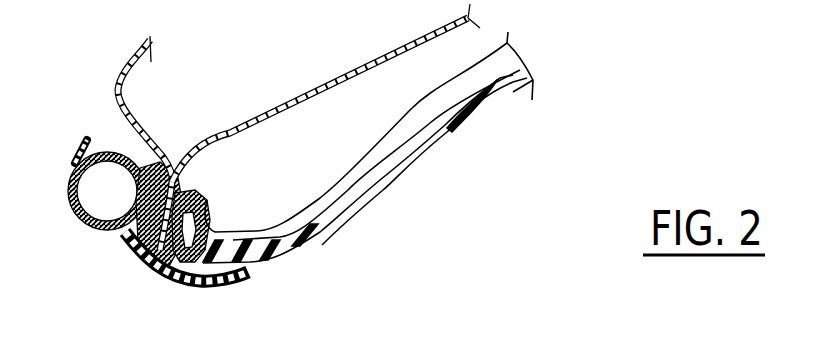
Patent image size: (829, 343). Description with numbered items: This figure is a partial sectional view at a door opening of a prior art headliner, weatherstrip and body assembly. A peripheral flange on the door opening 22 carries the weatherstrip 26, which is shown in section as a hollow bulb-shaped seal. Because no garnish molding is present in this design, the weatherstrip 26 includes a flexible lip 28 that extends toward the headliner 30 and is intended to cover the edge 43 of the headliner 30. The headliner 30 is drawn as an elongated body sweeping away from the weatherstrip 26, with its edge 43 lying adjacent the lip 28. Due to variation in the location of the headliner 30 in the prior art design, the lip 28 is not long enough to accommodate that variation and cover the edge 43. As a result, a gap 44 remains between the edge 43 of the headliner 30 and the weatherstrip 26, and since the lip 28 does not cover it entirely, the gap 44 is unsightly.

The door opening 22 is at (187, 181).
The weatherstrip 26 is at (117, 253).
The flexible lip 28 is at (225, 288).
The headliner 30 is at (380, 183).
The edge 43 is at (207, 213).
The gap 44 is at (180, 262).